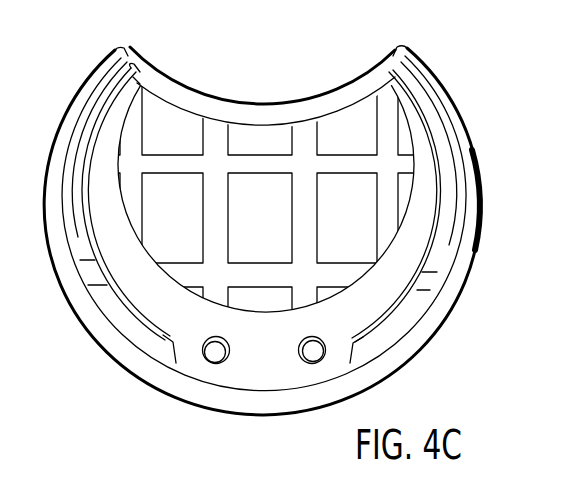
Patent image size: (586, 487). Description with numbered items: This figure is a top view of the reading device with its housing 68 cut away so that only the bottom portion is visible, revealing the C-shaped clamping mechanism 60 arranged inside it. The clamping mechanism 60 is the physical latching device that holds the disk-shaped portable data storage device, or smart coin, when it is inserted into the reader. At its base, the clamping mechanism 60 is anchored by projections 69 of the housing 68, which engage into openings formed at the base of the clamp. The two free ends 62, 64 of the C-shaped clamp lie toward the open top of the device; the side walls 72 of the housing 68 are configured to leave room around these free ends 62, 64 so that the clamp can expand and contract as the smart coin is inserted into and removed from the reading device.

The C-shaped clamping mechanism 60 is at (416, 250).
The free end 62 is at (400, 90).
The free end 64 is at (138, 74).
The housing 68 is at (406, 348).
The projections 69 is at (307, 351).
The side walls 72 is at (442, 90).